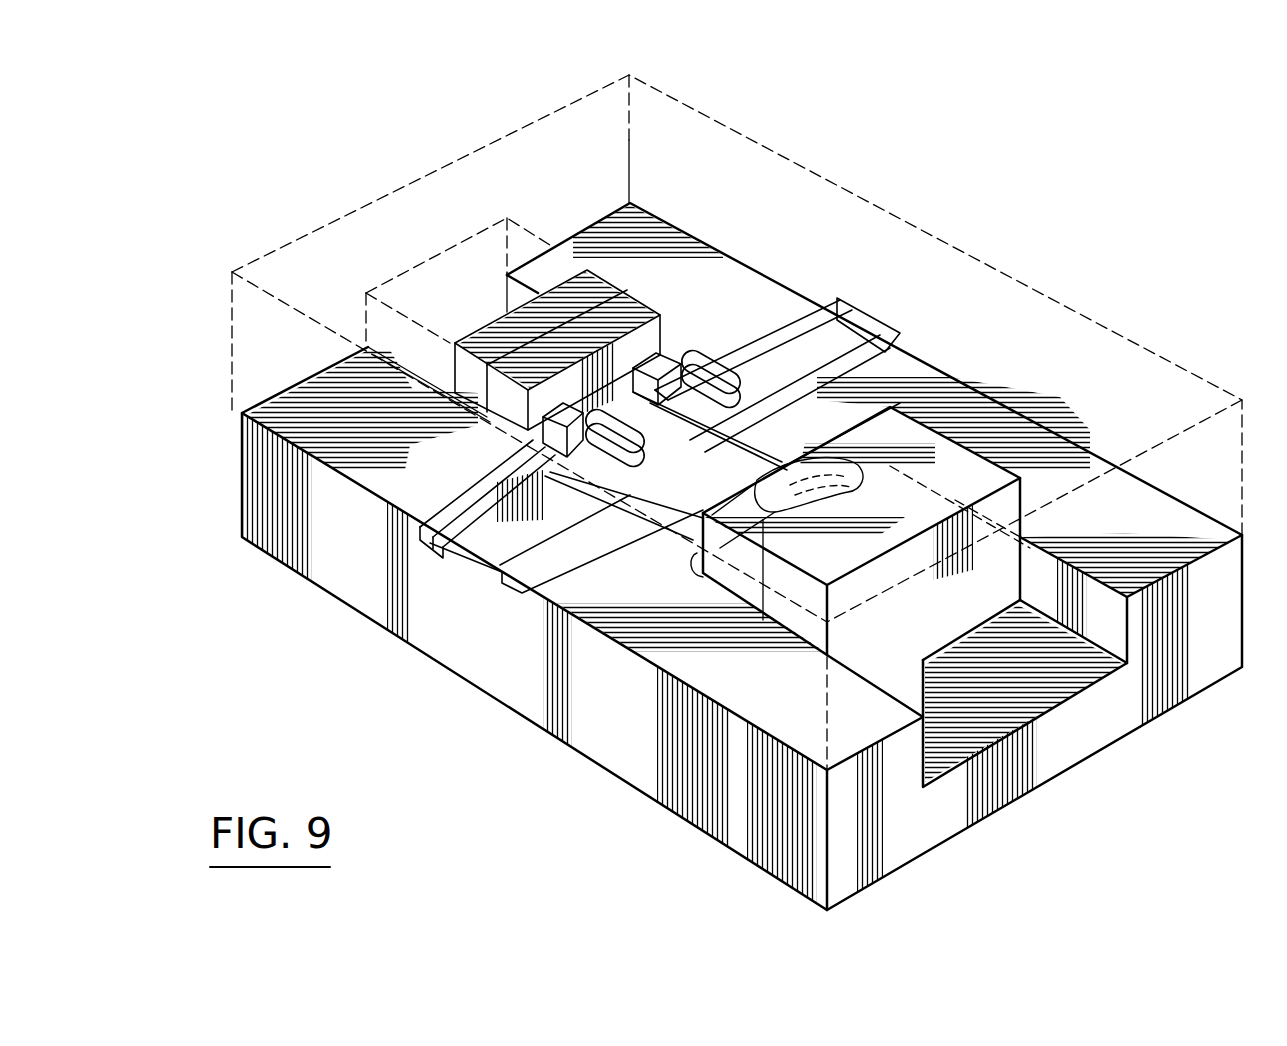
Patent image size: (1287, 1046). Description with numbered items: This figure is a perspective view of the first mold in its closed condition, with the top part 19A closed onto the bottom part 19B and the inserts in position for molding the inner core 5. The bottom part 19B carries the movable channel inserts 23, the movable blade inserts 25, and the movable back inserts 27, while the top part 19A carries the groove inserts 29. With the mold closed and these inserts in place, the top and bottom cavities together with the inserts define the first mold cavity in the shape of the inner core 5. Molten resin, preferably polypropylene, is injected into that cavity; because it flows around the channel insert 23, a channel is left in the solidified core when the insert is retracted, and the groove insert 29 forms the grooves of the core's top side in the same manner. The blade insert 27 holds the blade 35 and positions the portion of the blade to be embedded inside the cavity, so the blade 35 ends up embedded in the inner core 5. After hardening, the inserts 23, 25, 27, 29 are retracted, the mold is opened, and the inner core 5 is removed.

The top part of the first mold 19A is at (955, 207).
The bottom part of the first mold 19B is at (350, 643).
The movable channel insert 23 is at (765, 360).
The movable blade insert 25 is at (923, 442).
The movable back insert 27 is at (680, 350).
The groove insert 29 is at (647, 418).
The inner core 5 is at (713, 433).
The blade 35 is at (768, 520).